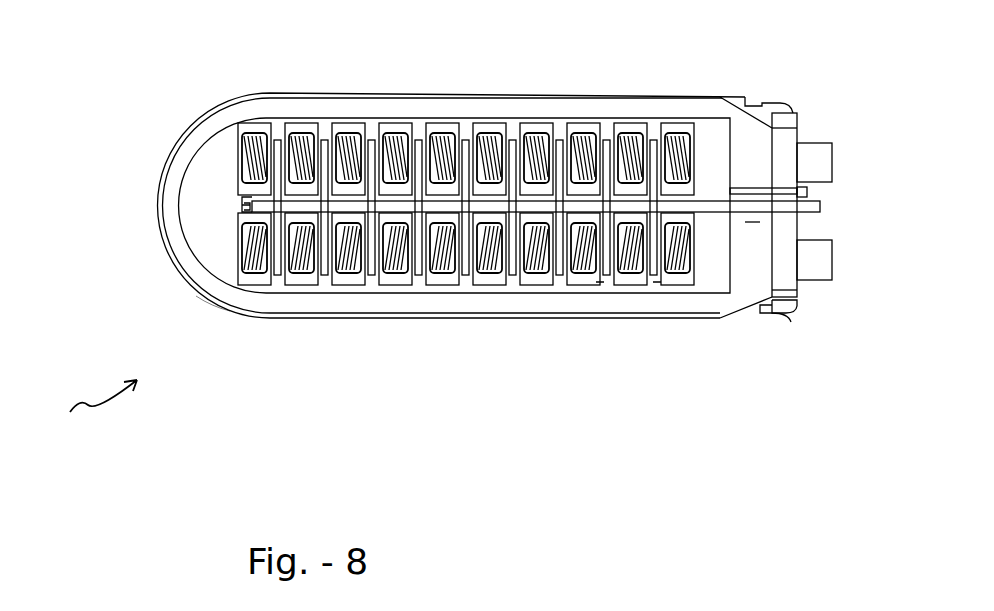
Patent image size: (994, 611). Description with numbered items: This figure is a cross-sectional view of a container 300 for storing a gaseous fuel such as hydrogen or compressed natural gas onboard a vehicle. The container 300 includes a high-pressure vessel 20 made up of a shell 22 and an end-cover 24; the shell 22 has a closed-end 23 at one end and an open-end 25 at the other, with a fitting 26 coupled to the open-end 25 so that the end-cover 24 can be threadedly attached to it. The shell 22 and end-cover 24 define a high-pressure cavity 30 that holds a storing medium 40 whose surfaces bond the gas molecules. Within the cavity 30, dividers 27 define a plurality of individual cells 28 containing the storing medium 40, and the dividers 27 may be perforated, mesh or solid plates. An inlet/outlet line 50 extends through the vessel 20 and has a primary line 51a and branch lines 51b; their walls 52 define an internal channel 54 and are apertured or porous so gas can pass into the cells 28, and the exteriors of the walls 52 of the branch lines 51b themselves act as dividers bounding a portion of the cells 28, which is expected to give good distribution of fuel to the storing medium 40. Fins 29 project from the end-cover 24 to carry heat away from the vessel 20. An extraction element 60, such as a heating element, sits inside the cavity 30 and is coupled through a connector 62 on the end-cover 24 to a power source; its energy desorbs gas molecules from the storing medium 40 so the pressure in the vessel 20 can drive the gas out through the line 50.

The high-pressure vessel 20 is at (478, 217).
The shell 22 is at (227, 308).
The closed-end 23 is at (162, 200).
The end-cover 24 is at (797, 135).
The open-end 25 is at (790, 327).
The fitting 26 is at (797, 303).
The dividers 27 is at (535, 287).
The cells 28 is at (520, 280).
The fins 29 is at (823, 162).
The cavity 30 is at (683, 110).
The storing medium 40 is at (353, 133).
The inlet/outlet line 50 is at (822, 212).
The primary line 51a is at (750, 222).
The branch line 51b is at (657, 280).
The walls 52 is at (242, 197).
The internal channel 54 is at (242, 206).
The extraction element 60 is at (210, 283).
The connector 62 is at (810, 192).
The container 300 is at (78, 414).